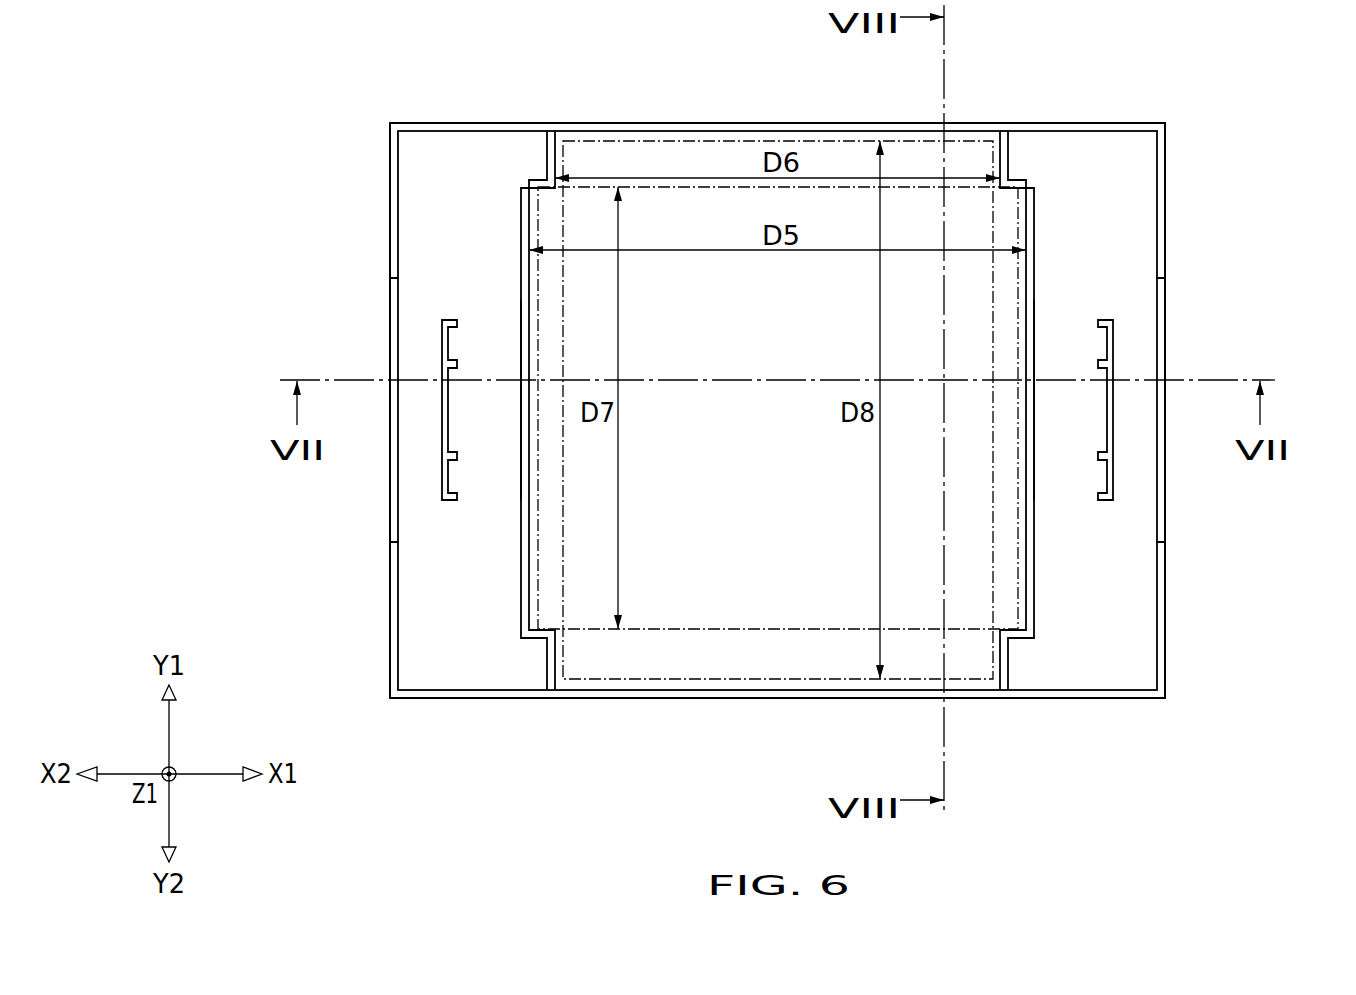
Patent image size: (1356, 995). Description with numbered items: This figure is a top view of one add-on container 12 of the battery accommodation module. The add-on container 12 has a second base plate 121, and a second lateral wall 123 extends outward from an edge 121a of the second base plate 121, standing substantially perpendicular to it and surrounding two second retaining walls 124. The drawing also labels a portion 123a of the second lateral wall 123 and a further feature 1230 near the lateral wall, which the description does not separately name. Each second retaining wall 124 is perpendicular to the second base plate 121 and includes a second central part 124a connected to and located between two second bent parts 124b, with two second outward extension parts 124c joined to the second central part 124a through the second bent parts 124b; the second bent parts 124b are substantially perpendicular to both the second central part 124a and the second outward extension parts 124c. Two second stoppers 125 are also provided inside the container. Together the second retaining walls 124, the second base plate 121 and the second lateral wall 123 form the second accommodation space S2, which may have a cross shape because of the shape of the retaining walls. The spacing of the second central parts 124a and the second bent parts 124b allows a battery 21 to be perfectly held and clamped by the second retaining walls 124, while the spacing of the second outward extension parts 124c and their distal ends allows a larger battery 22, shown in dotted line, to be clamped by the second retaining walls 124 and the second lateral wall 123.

The add-on container 12 is at (1355, 43).
The battery 21 is at (541, 300).
The battery 22 is at (728, 151).
The second base plate 121 is at (770, 487).
The edge 121a is at (832, 123).
The second lateral wall 123 is at (628, 130).
The side portion of frame 123a is at (390, 428).
The opening 1230 is at (798, 682).
The second retaining wall 124 is at (521, 242).
The second central part 124a is at (521, 585).
The second bent part 124b is at (538, 183).
The second outward extension part 124c is at (547, 152).
The second stopper 125 is at (447, 417).
The second accommodation space S2 is at (702, 537).